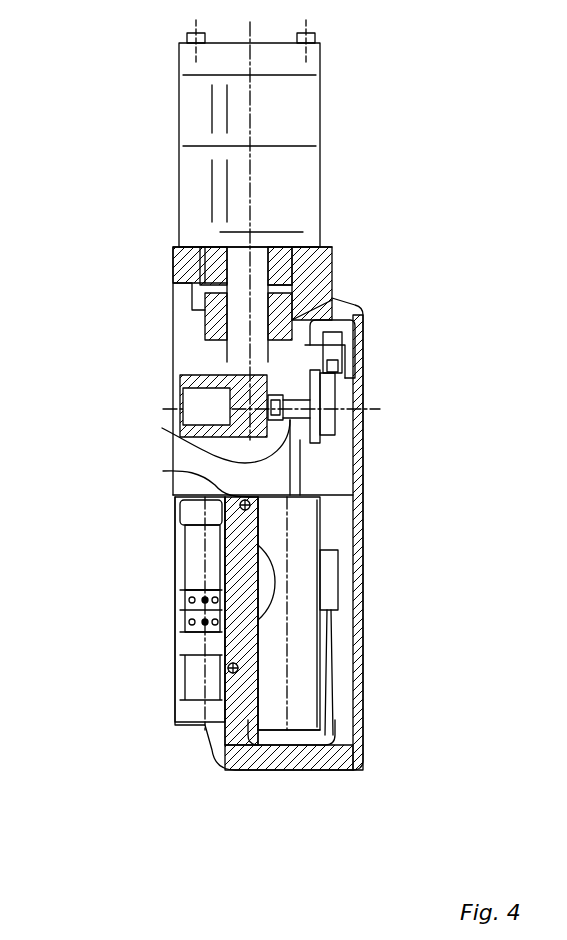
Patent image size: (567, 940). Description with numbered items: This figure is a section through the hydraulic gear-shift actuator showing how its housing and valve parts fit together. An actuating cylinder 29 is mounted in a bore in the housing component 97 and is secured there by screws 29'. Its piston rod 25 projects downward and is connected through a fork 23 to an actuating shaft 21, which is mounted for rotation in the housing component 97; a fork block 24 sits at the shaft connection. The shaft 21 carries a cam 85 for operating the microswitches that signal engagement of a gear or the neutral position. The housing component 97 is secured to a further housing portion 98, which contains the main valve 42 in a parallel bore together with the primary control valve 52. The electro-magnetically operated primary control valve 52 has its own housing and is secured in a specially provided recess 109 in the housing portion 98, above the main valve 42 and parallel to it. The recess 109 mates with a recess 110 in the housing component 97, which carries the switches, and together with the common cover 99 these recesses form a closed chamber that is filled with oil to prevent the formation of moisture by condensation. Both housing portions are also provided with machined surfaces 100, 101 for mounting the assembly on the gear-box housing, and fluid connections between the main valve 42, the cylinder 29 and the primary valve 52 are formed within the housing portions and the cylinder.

The actuating cylinder 29 is at (333, 140).
The piston rod 25 is at (262, 247).
The housing component 97 is at (312, 270).
The screw 29' is at (398, 333).
The machined surface 100 is at (168, 265).
The fork 23 is at (260, 370).
The bearing block 24 is at (215, 462).
The actuating shaft 21 is at (348, 400).
The cam 85 is at (328, 413).
The housing portion 98 is at (240, 490).
The machined surface 101 is at (162, 552).
The main valve 42 is at (190, 628).
The recess 110 is at (315, 476).
The cover 99 is at (362, 683).
The recess 109 is at (298, 722).
The primary control valve 52 is at (314, 745).